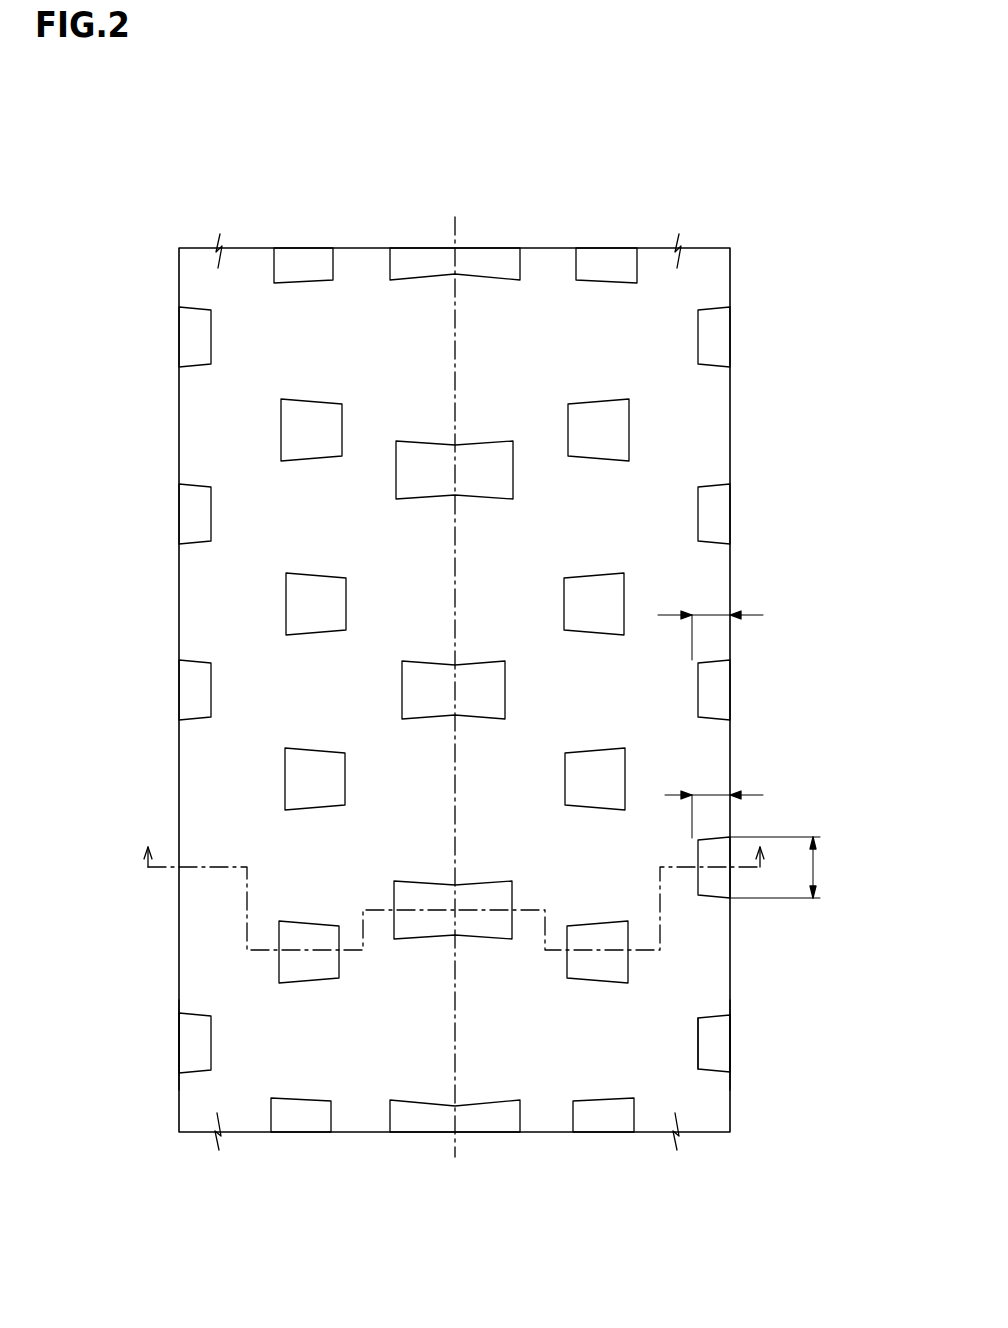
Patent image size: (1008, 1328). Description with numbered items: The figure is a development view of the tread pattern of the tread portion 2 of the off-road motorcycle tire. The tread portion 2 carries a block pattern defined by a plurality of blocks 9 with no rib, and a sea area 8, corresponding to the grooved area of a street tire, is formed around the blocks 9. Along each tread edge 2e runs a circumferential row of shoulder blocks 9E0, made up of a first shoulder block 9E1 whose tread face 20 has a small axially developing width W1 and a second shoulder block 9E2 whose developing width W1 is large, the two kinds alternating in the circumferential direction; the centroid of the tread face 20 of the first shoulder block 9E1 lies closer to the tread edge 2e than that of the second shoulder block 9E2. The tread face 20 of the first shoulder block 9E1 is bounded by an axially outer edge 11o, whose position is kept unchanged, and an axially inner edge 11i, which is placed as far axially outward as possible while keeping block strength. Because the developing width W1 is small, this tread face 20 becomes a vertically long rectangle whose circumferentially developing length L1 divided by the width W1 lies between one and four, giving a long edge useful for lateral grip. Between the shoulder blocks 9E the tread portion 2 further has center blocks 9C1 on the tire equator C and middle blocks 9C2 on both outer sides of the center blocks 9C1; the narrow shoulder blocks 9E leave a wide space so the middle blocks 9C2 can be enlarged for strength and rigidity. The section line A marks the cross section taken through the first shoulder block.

The tread portion 2 is at (464, 635).
The sea area 8 is at (402, 1029).
The block 9 is at (318, 423).
The center block 9C1 is at (443, 1117).
The middle block 9C2 is at (302, 1116).
The shoulder block 9E is at (511, 1123).
The first shoulder block 9E1 is at (715, 880).
The shoulder block 9E0 is at (787, 897).
The second shoulder block 9E2 is at (718, 688).
The tread edge 2e is at (467, 1025).
The axially outer edge of the tread face 11o is at (177, 1040).
The axially inner edge of the tread face 11i is at (697, 1043).
The tread face 20 is at (708, 1053).
The tire equator C is at (455, 236).
The developing width W1 is at (716, 709).
The circumferentially developing length L1 is at (790, 867).
The section line A- A is at (455, 896).